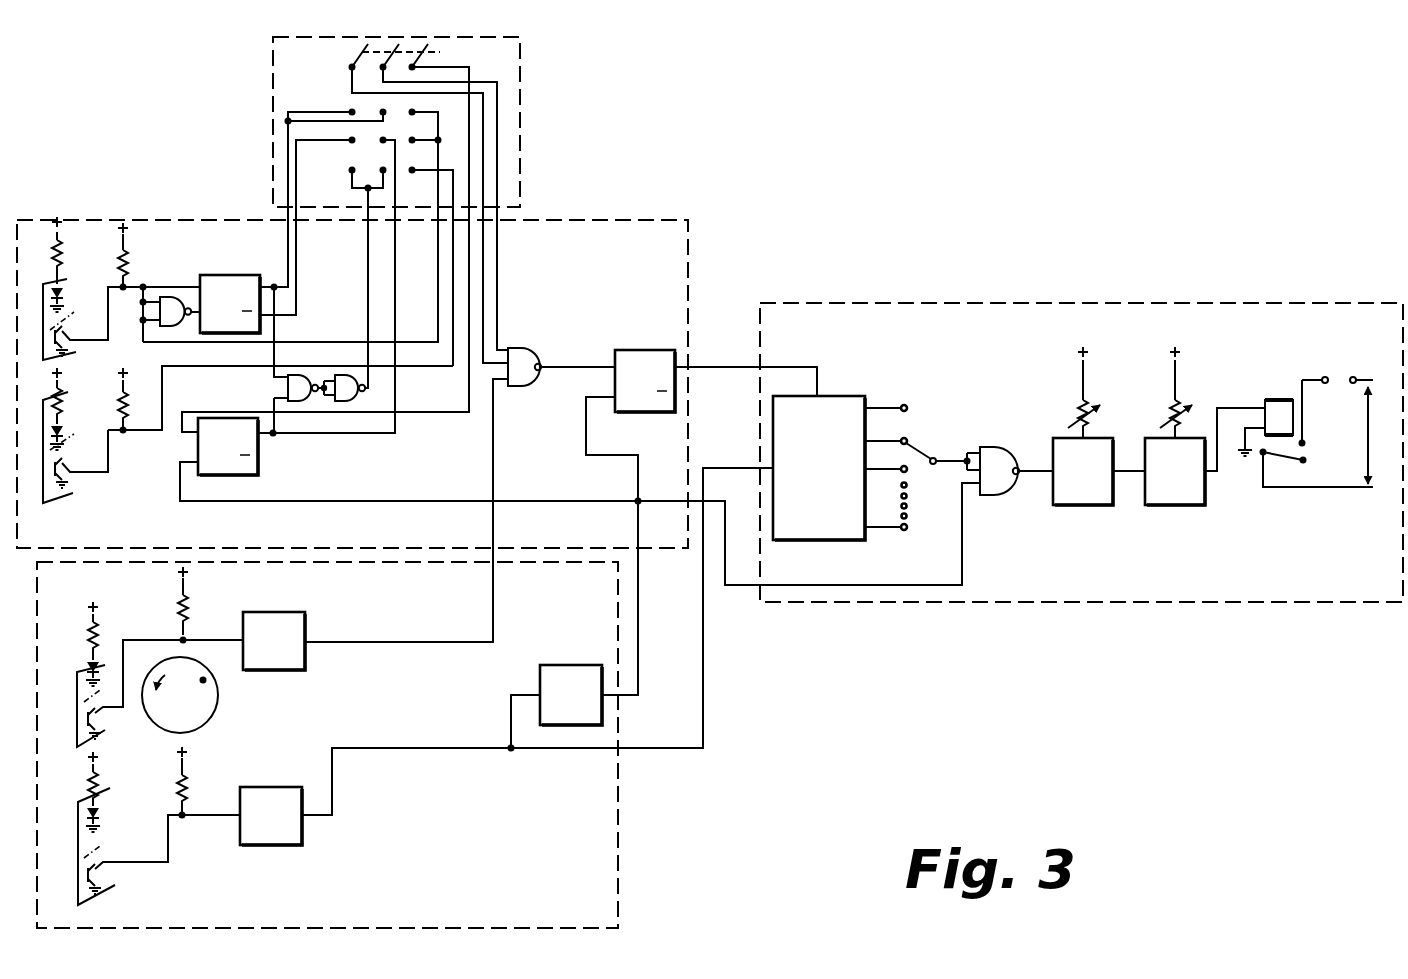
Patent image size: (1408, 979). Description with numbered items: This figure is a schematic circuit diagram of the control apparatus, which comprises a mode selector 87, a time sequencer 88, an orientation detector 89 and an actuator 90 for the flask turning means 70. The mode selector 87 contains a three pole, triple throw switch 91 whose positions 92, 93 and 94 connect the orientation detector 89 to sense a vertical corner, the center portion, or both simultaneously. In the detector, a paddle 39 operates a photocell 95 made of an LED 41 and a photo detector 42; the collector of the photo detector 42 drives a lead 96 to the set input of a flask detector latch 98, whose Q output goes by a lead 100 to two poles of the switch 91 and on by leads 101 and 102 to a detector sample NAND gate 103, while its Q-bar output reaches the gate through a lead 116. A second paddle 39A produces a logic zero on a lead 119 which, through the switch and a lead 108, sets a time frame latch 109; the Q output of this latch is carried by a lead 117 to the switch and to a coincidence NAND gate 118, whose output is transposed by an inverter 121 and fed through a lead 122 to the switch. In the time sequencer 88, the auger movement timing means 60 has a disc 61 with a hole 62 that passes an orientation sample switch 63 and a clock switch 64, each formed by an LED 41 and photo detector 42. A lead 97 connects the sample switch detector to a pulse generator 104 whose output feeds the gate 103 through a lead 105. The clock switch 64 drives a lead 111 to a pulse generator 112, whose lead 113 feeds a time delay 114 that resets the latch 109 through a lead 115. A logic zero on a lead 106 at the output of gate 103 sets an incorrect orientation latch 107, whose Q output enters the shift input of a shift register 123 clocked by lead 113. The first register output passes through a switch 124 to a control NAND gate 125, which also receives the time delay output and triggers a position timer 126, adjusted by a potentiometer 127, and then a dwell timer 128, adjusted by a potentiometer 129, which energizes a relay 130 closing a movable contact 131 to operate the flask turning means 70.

The mode selector 87 is at (524, 110).
The time sequencer 88 is at (522, 930).
The orientation detector 89 is at (233, 196).
The actuator 90 is at (1180, 607).
The three pole, triple throw switch 91 is at (442, 52).
The switch position 92 is at (420, 110).
The switch position 93 is at (420, 135).
The switch position 94 is at (414, 176).
The photocell 95 is at (42, 352).
The lead 96 is at (131, 283).
The lead 97 is at (188, 637).
The flask detector latch 98 is at (230, 280).
The lead 100 is at (288, 167).
The lead 101 is at (350, 93).
The lead 102 is at (512, 80).
The detector sample NAND gate 103 is at (523, 349).
The pulse generator 104 is at (296, 630).
The lead 105 is at (406, 642).
The lead 106 is at (598, 365).
The incorrect orientation latch 107 is at (651, 350).
The lead 108 is at (469, 380).
The time frame latch 109 is at (256, 472).
The lead 111 is at (195, 814).
The pulse generator 112 is at (275, 802).
The lead 113 is at (393, 748).
The time delay 114 is at (565, 684).
The lead 115 is at (634, 500).
The lead 116 is at (296, 187).
The lead 117 is at (395, 288).
The coincidence NAND gate 118 is at (302, 401).
The lead 119 is at (162, 378).
The inverter 121 is at (348, 401).
The lead 122 is at (359, 278).
The shift register 123 is at (807, 532).
The switch 124 is at (932, 438).
The control NAND gate 125 is at (997, 482).
The position timer 126 is at (1080, 508).
The potentiometer 127 is at (1085, 404).
The dwell timer 128 is at (1175, 508).
The potentiometer 129 is at (1178, 400).
The relay 130 is at (1280, 413).
The movable contact 131 is at (1300, 465).
The flask turning means 70 is at (1343, 376).
The paddle 39 is at (78, 312).
The paddle 39A is at (94, 430).
The LED 41 is at (66, 272).
The photo detector 42 is at (62, 345).
The auger movement timing means 60 is at (148, 623).
The disc 61 is at (210, 718).
The hole 62 is at (203, 681).
The orientation sample switch 63 is at (76, 700).
The clock switch 64 is at (77, 852).